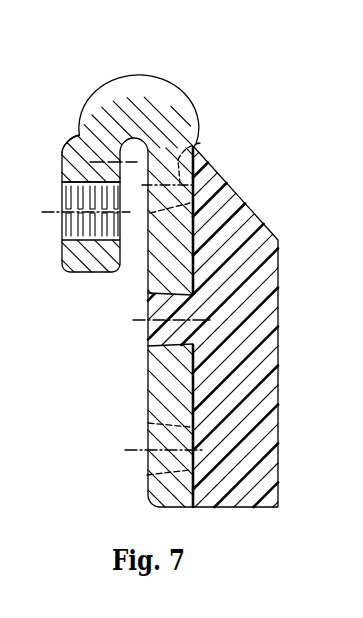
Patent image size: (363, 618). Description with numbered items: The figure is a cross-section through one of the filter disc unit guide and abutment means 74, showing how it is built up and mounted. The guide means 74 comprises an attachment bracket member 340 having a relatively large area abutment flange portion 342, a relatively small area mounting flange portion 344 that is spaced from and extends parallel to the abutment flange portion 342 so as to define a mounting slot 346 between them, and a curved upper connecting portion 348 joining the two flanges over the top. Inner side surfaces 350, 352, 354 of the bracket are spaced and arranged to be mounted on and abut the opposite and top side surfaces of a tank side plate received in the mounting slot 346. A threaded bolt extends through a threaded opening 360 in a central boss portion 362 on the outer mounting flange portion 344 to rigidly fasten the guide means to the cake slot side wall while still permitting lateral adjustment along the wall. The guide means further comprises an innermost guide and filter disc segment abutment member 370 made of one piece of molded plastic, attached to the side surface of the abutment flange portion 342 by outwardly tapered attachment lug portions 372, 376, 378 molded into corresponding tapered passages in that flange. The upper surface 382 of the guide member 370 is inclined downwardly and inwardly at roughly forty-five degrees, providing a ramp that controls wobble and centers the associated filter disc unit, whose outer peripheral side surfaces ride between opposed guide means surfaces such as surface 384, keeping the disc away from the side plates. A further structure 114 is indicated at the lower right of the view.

The filter disc unit guide and abutment means 74 is at (182, 104).
The adjacent structure 114 is at (362, 530).
The attachment bracket member 340 is at (68, 143).
The abutment flange portion 342 is at (163, 376).
The mounting flange portion 344 is at (68, 258).
The mounting slot 346 is at (70, 158).
The curved upper connecting portion 348 is at (137, 108).
The inner side surface 350 is at (122, 243).
The inner side surface 352 is at (148, 150).
The inner side surface 354 is at (147, 273).
The threaded opening 360 is at (66, 232).
The central boss portion 362 is at (77, 173).
The guide and filter disc segment abutment member 370 is at (283, 240).
The attachment lug portion 372 is at (200, 143).
The attachment lug portion 376 is at (154, 331).
The attachment lug portion 378 is at (153, 480).
The upper surface 382 is at (248, 201).
The guide means surface 384 is at (280, 350).